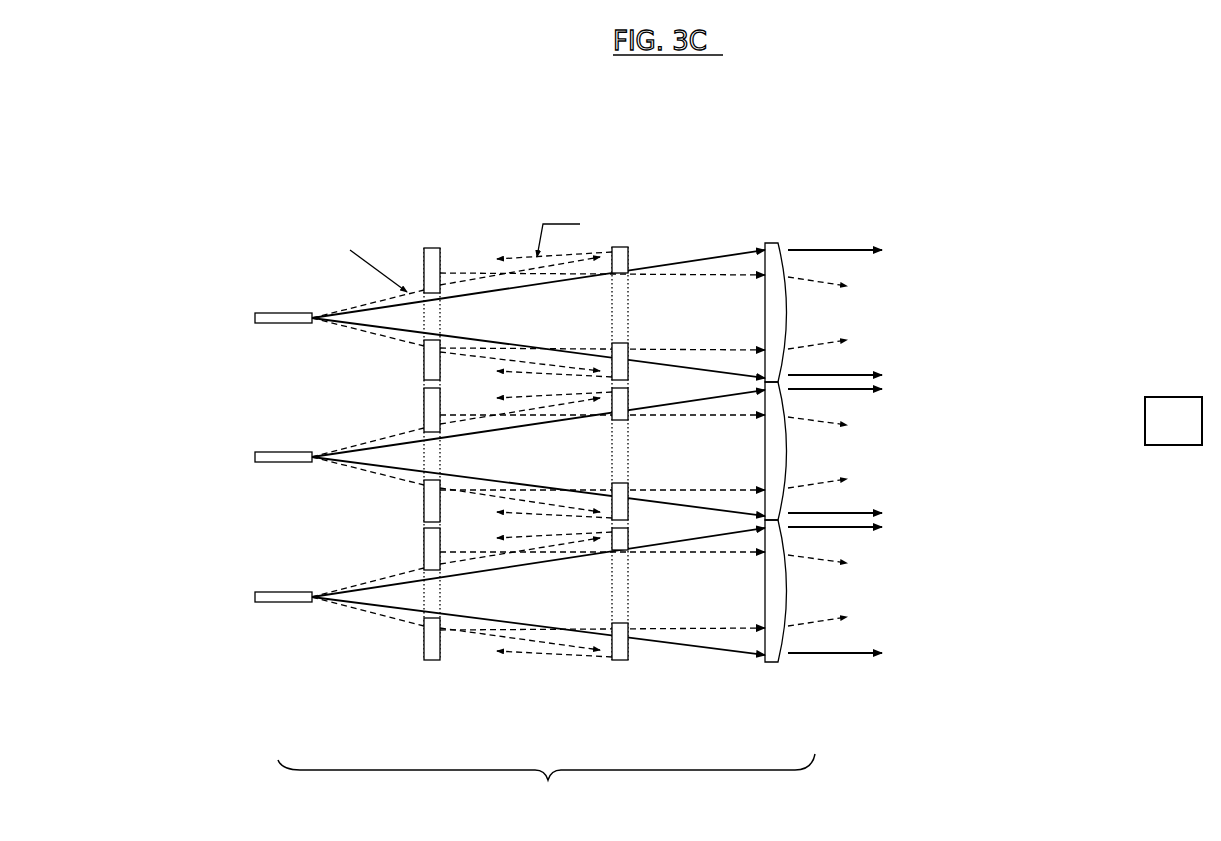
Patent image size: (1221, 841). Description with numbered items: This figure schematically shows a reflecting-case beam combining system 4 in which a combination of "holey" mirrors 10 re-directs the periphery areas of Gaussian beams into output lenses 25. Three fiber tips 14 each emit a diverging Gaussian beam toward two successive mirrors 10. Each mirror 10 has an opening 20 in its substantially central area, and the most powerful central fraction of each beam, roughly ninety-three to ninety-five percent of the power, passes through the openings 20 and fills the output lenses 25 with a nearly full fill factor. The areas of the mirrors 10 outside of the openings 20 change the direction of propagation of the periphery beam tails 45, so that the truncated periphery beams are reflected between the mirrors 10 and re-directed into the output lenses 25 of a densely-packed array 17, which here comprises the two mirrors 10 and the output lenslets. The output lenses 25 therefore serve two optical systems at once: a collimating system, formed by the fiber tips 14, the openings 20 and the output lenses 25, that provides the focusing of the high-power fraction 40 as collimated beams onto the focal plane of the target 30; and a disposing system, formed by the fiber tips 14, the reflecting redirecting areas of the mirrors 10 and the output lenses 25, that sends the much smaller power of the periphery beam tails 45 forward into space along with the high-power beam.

The system 4 is at (280, 135).
The holey mirrors 10 is at (422, 262).
The fiber tips 14 is at (308, 313).
The densely-packed array 17 is at (546, 787).
The opening 20 is at (463, 328).
The output lenses 25 is at (773, 242).
The target 30 is at (1185, 434).
The high-power fraction 40 is at (892, 231).
The periphery beam tails 45 is at (850, 324).